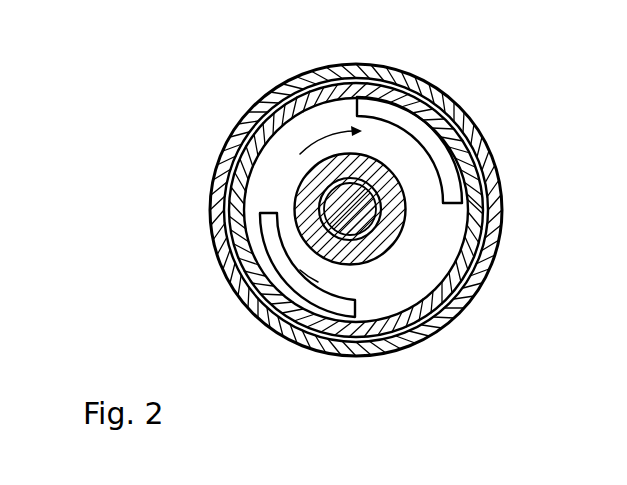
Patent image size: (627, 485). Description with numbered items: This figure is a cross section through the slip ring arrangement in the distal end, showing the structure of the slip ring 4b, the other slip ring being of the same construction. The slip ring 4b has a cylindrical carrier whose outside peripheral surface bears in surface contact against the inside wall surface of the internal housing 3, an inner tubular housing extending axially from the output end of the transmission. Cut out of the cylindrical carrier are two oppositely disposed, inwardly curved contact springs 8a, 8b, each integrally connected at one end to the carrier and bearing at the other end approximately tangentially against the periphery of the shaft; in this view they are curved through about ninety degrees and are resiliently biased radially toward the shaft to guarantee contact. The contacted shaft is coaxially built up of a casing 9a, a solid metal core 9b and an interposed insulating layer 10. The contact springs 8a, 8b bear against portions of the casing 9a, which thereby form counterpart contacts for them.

The internal housing 3 is at (455, 263).
The slip ring 4b is at (412, 340).
The contact spring 8a is at (448, 165).
The contact spring 8b is at (262, 215).
The casing 9a is at (393, 150).
The solid metal core 9b is at (293, 258).
The insulating layer 10 is at (455, 200).